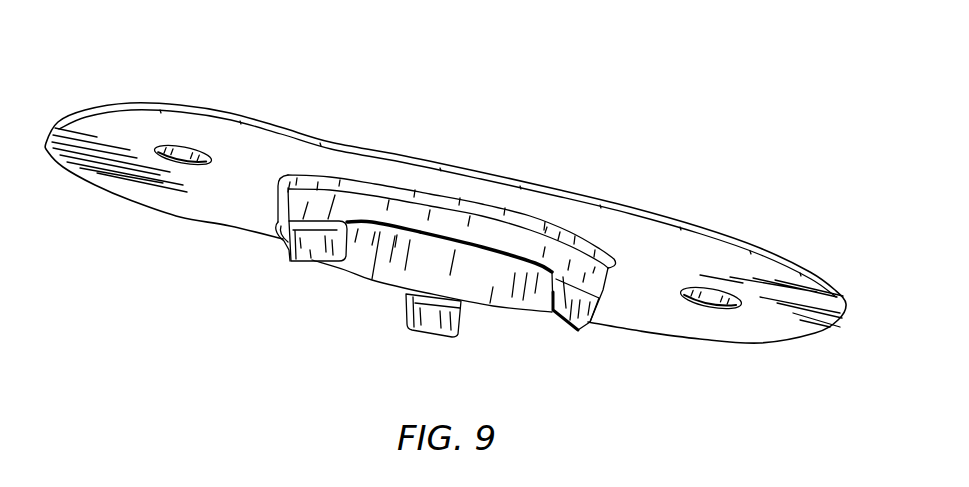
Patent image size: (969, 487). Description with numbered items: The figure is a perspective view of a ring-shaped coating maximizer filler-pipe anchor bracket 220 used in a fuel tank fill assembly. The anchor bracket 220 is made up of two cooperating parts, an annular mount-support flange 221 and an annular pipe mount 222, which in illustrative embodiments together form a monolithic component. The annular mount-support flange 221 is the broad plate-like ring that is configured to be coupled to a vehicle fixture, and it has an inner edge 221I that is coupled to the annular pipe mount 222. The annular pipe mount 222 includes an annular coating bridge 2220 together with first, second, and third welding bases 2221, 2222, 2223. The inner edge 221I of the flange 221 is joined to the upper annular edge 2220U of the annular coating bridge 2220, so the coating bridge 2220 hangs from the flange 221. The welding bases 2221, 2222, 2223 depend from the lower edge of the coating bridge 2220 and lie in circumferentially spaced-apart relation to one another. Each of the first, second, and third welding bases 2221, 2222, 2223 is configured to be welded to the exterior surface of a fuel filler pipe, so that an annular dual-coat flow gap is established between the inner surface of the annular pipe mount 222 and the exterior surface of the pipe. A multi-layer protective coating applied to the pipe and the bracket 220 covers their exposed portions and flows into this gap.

The coating maximizer filler-pipe anchor bracket 220 is at (437, 125).
The annular mount-support flange 221 is at (722, 210).
The inner edge 221I is at (594, 253).
The annular pipe mount 222 is at (264, 211).
The annular coating bridge 2220 is at (487, 228).
The upper annular edge 2220U is at (505, 309).
The first welding base 2221 is at (302, 247).
The second welding base 2222 is at (580, 323).
The third welding base 2223 is at (428, 321).